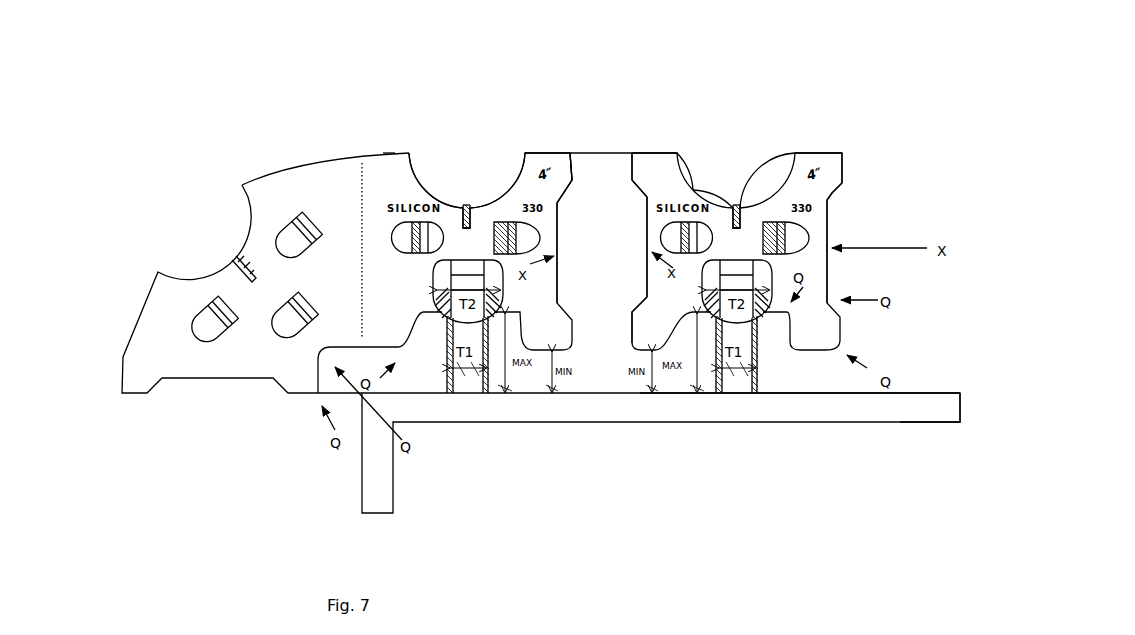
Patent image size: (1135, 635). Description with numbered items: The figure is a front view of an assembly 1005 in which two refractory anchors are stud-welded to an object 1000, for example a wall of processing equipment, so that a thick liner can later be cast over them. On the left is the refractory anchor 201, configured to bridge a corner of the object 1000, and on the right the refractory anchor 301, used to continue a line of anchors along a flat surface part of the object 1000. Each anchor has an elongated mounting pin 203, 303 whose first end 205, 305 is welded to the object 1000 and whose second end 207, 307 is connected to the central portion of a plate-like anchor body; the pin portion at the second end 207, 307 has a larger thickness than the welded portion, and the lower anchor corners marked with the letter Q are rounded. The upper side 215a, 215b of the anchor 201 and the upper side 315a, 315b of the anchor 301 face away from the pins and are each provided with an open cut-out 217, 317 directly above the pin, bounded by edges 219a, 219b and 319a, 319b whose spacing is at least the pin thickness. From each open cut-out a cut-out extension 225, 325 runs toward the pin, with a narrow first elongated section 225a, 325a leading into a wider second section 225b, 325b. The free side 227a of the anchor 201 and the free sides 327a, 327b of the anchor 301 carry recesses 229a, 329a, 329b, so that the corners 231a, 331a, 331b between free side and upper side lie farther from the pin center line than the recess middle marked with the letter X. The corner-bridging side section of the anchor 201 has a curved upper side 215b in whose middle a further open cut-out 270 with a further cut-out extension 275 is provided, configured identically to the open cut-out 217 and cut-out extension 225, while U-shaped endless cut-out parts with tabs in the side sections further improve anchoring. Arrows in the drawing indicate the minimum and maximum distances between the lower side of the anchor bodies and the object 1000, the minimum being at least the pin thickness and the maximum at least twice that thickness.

The assembly 1005 is at (222, 160).
The further open cut-out 270 is at (170, 228).
The further cut-out extension 275 is at (250, 303).
The refractory anchor 201 is at (322, 142).
The refractory anchor 301 is at (903, 127).
The elongated mounting pin 203 is at (458, 335).
The elongated mounting pin 303 is at (748, 332).
The first end 205 is at (465, 393).
The first end 305 is at (743, 393).
The second end 207 is at (490, 263).
The second end 307 is at (704, 292).
The upper side 215a is at (548, 153).
The upper side 215b is at (383, 153).
The open cut-out 217 is at (478, 137).
The edge 219a is at (527, 153).
The edge 219b is at (408, 153).
The cut-out extension 225 is at (453, 228).
The first elongated section 225a is at (468, 205).
The second section 225b is at (470, 227).
The free side 227a is at (557, 277).
The recess 229a is at (578, 194).
The corner 231a is at (570, 153).
The upper side 315a is at (823, 153).
The upper side 315b is at (652, 153).
The open cut-out 317 is at (726, 145).
The edge 319a is at (795, 153).
The edge 319b is at (677, 153).
The cut-out extension 325 is at (745, 222).
The first elongated section 325a is at (742, 205).
The second section 325b is at (737, 230).
The free side 327a is at (828, 274).
The free side 327b is at (646, 230).
The recess 329a is at (853, 198).
The recess 329b is at (632, 302).
The corner 331a is at (843, 153).
The corner 331b is at (632, 152).
The object 1000 is at (913, 400).